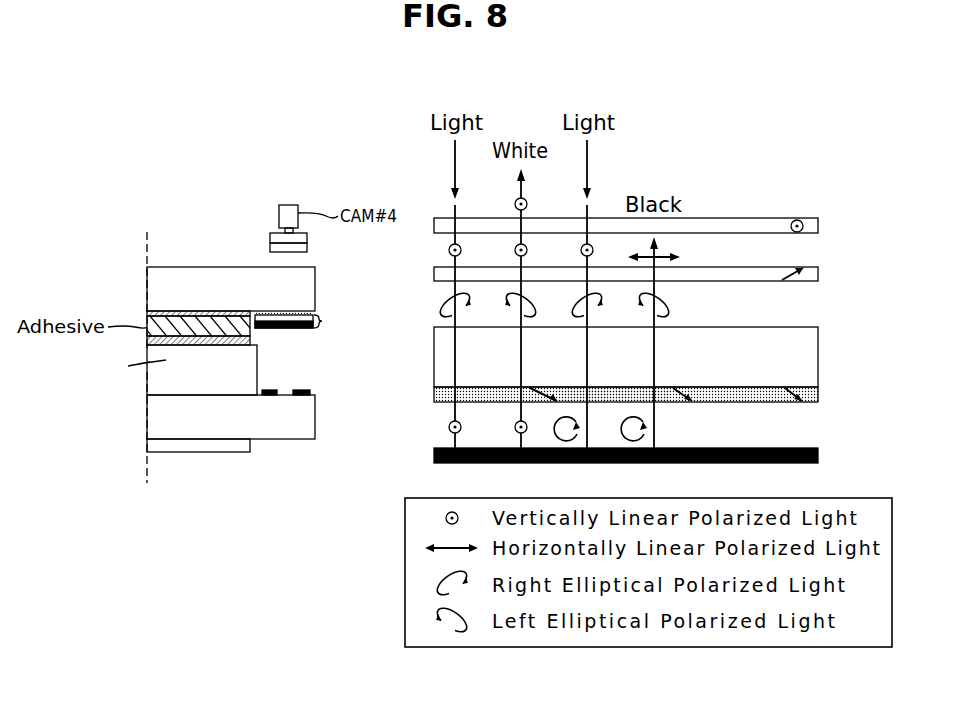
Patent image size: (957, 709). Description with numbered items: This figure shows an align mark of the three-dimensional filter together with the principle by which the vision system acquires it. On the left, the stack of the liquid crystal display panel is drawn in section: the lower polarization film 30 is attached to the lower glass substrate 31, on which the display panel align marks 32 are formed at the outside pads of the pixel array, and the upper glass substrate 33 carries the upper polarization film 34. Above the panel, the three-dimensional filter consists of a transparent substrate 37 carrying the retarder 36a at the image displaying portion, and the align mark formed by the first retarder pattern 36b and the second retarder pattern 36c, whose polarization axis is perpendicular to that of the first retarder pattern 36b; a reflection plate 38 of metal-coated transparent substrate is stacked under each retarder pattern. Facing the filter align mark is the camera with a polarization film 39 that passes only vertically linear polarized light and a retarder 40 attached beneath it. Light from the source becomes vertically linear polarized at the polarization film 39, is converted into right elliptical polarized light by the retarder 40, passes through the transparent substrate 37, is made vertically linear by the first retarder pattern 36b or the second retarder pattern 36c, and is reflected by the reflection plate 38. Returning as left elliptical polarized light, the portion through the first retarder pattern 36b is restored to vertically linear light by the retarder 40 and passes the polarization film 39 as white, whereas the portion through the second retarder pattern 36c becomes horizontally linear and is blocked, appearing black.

The lower polarization film 30 is at (245, 446).
The lower glass substrate 31 is at (305, 418).
The display panel align marks 32 is at (310, 390).
The upper glass substrate 33 is at (250, 362).
The upper polarization film 34 is at (147, 342).
The retarder 36a is at (147, 312).
The first retarder pattern 36b is at (317, 315).
The second retarder pattern 36c is at (285, 312).
The transparent substrate 37 is at (303, 293).
The reflection plate 38 is at (322, 323).
The polarization film 39 is at (307, 238).
The retarder 40 is at (307, 250).